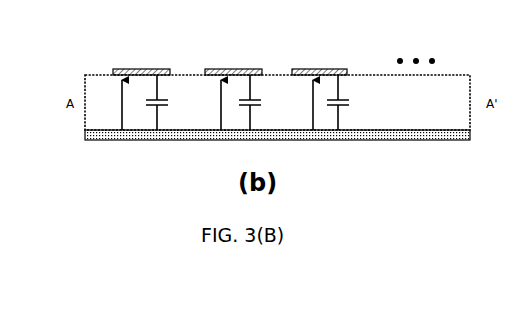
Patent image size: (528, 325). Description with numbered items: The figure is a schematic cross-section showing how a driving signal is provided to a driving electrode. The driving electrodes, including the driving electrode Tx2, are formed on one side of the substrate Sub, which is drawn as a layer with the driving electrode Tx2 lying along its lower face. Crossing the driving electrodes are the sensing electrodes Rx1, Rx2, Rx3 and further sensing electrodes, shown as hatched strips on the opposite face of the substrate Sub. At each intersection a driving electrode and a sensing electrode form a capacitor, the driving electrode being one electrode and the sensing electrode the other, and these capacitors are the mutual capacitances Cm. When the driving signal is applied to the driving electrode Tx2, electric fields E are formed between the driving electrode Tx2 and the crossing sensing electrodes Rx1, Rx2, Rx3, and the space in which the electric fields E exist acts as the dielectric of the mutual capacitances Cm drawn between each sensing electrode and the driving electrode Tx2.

The substrate Sub is at (460, 78).
The driving electrode Tx2 is at (193, 136).
The sensing electrode Rx1 is at (167, 69).
The sensing electrode Rx2 is at (258, 69).
The sensing electrode Rx3 is at (347, 69).
The electric field E is at (208, 105).
The mutual capacitance Cm is at (254, 102).